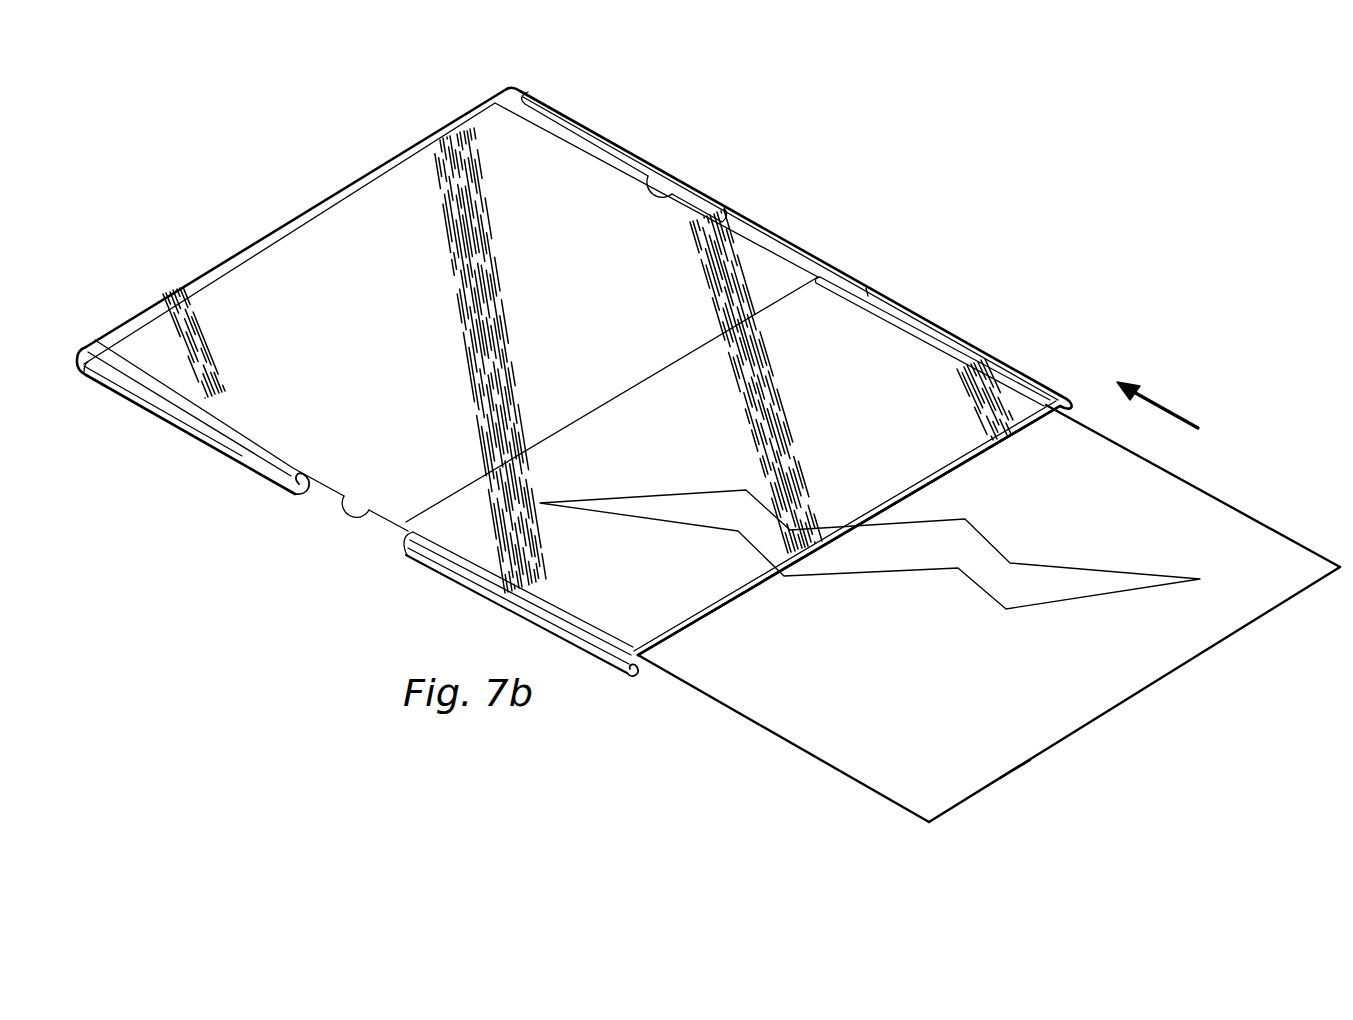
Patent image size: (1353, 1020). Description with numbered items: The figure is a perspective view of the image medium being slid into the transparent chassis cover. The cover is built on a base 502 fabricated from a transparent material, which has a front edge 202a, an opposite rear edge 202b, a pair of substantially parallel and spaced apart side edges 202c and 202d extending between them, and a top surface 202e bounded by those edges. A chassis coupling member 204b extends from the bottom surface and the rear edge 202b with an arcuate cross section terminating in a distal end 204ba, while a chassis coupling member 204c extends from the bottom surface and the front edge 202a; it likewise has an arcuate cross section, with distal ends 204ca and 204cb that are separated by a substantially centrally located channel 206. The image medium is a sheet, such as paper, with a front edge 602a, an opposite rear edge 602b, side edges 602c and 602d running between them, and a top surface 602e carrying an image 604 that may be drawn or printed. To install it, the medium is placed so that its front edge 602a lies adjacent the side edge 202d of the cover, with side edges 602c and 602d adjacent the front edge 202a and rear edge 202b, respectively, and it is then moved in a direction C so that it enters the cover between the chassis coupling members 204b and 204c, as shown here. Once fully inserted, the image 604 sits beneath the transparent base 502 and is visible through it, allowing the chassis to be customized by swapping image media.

The base 502 is at (226, 257).
The front edge 202a is at (373, 498).
The rear edge 202b is at (778, 235).
The side edge 202c is at (343, 188).
The side edge 202d is at (734, 597).
The top surface 202e is at (407, 167).
The chassis coupling member 204b is at (615, 140).
The distal end 204ba is at (676, 190).
The chassis coupling member 204c is at (243, 456).
The distal end 204ca is at (640, 681).
The distal end 204cb is at (308, 488).
The channel 206 is at (367, 527).
The front edge 602a is at (647, 380).
The rear edge 602b is at (1147, 689).
The side edge 602c is at (1236, 502).
The side edge 602d is at (812, 759).
The top surface 602e is at (1008, 753).
The image 604 is at (1037, 580).
The direction C is at (1176, 412).